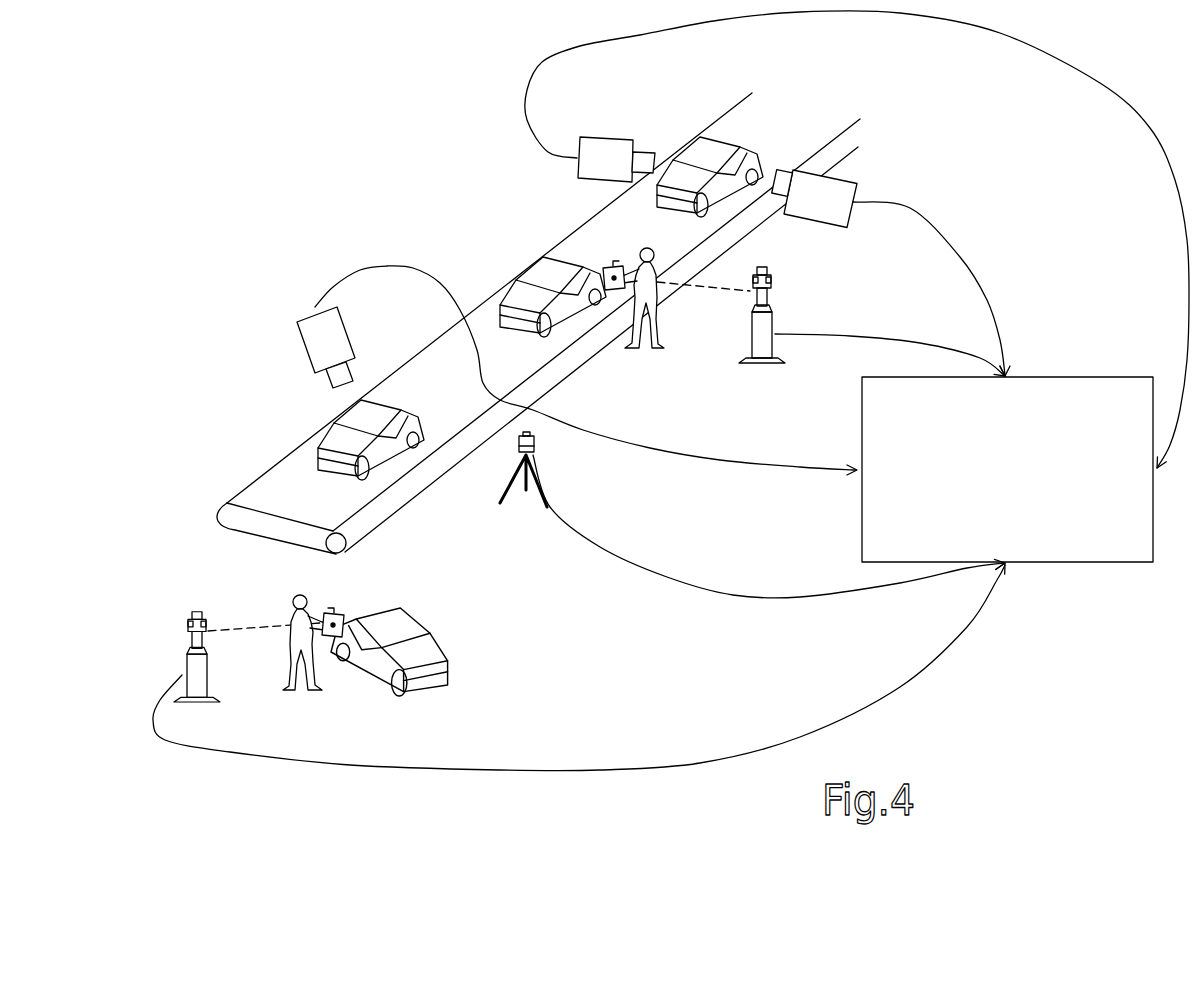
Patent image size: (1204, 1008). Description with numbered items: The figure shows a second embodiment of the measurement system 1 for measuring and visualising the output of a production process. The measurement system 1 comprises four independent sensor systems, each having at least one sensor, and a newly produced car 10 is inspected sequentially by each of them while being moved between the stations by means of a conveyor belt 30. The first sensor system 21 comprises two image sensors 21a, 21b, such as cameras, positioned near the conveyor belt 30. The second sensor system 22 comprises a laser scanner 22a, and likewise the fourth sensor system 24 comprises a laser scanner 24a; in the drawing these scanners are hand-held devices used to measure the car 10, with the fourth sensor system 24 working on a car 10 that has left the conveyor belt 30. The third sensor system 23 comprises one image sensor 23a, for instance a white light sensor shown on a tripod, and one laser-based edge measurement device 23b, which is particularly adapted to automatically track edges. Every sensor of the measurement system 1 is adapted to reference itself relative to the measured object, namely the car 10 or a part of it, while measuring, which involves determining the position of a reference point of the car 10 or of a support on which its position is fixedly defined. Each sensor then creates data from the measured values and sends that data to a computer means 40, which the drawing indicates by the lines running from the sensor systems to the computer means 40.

The measurement system 1 is at (370, 115).
The car 10 is at (547, 275).
The first sensor system 21 is at (778, 176).
The image sensor 21a is at (828, 205).
The image sensor 21b is at (600, 157).
The second sensor system 22 is at (694, 346).
The laser scanner 22a is at (613, 283).
The third sensor system 23 is at (439, 440).
The image sensor 23a is at (532, 448).
The laser-based edge measurement device 23b is at (318, 352).
The fourth sensor system 24 is at (294, 651).
The laser scanner 24a is at (325, 632).
The conveyor belt 30 is at (583, 240).
The computer means 40 is at (1007, 469).